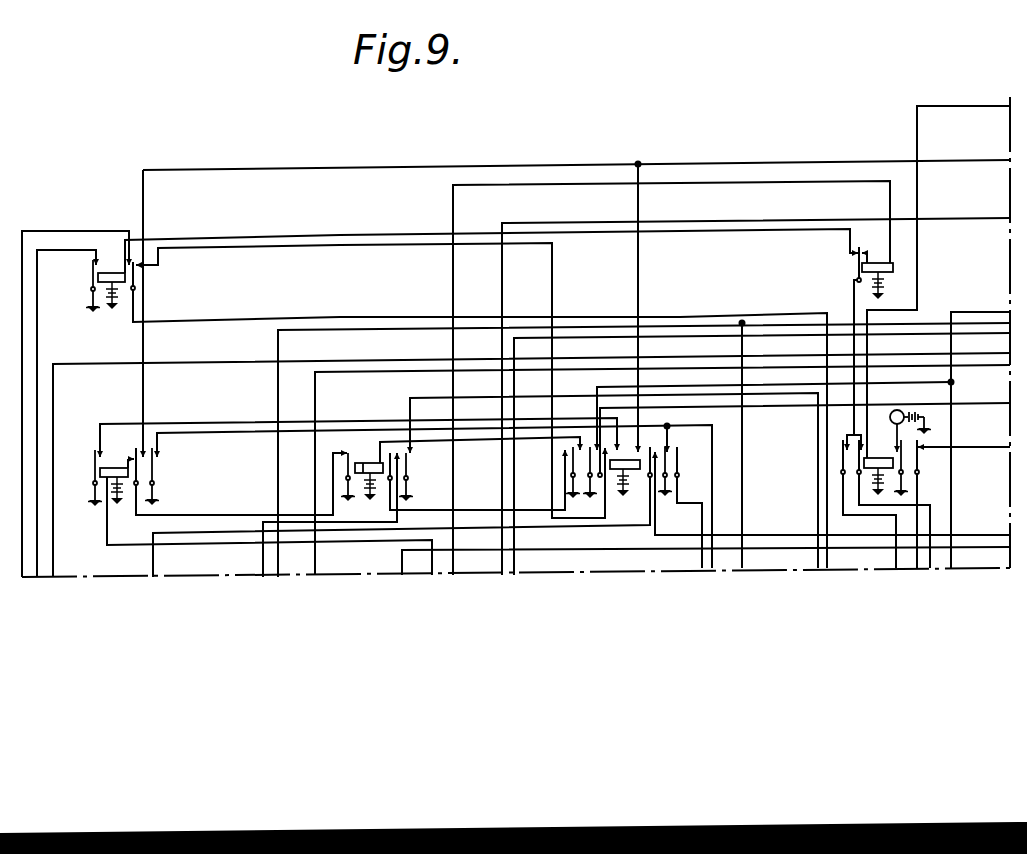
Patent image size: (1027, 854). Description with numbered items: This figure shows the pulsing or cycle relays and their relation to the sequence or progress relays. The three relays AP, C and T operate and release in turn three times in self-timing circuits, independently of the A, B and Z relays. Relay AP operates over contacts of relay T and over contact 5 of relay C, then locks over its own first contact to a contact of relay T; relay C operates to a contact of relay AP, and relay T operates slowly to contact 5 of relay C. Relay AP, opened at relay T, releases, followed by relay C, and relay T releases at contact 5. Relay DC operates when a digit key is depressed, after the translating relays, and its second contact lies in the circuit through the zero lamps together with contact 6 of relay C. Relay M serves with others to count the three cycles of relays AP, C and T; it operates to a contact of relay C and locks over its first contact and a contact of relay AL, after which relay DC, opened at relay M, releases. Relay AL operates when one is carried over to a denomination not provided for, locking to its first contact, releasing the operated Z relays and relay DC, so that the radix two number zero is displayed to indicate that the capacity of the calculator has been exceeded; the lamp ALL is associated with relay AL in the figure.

The relay contact 5 is at (575, 472).
The relay contact 6 is at (606, 469).
The relay DC is at (108, 273).
The relay AP is at (112, 467).
The relay SO is at (360, 462).
The relay T is at (372, 462).
The relay C is at (625, 459).
The relay M is at (876, 262).
The relay AL is at (879, 457).
The alarm lamp ALL is at (899, 428).